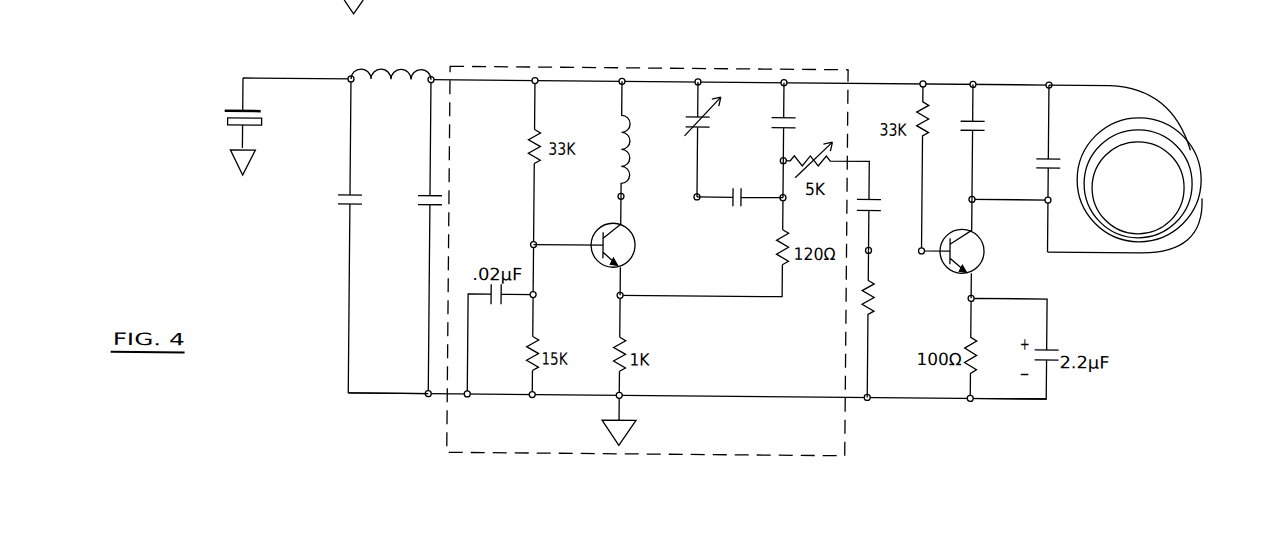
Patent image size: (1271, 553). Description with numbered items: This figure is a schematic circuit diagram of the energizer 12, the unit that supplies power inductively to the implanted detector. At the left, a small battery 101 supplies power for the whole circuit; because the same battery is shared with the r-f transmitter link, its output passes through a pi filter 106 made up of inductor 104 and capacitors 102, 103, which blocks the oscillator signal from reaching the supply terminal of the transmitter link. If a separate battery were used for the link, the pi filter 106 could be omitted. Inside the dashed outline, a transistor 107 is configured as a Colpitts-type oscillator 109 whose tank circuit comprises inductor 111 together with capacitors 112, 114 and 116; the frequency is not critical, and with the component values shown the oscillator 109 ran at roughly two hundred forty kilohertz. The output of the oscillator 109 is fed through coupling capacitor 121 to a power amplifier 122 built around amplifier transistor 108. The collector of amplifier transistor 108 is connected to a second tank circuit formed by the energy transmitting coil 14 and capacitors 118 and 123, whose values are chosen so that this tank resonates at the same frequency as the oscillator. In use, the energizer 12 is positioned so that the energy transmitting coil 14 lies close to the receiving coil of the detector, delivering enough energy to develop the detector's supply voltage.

The energizer 12 is at (1115, 302).
The energy transmitting coil 14 is at (1196, 218).
The battery 101 is at (243, 108).
The capacitor 102 is at (341, 193).
The capacitor 103 is at (431, 207).
The inductor 104 is at (385, 73).
The pi filter 106 is at (402, 135).
The transistor 107 is at (598, 234).
The amplifier transistor 108 is at (950, 257).
The Colpitts-type oscillator 109 is at (720, 63).
The inductor 111 is at (617, 140).
The capacitor 112 is at (693, 113).
The capacitor 114 is at (731, 197).
The capacitor 116 is at (780, 113).
The capacitor 118 is at (978, 115).
The coupling capacitor 121 is at (873, 191).
The power amplifier 122 is at (908, 344).
The capacitor 123 is at (1053, 150).